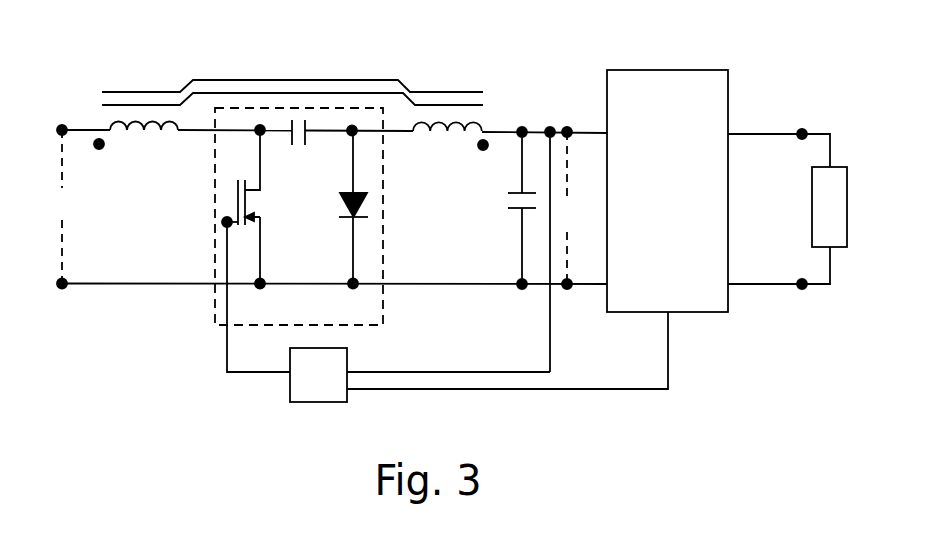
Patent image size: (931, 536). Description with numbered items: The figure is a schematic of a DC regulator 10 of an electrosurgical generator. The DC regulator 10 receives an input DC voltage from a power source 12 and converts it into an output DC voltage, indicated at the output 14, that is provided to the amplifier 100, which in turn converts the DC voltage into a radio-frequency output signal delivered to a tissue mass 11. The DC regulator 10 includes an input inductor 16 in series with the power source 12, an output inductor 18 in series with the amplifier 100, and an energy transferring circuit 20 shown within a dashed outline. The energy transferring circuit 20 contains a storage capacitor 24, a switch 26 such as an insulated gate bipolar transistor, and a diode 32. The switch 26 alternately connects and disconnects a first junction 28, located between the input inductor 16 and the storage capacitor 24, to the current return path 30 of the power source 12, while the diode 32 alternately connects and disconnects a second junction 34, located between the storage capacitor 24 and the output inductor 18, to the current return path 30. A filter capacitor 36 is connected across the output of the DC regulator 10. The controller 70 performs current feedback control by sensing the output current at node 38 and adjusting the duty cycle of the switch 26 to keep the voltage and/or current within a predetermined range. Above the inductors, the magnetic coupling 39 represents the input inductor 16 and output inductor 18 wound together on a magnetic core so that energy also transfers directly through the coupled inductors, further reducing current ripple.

The DC regulator 10 is at (297, 75).
The tissue mass 11 is at (819, 223).
The power source 12 is at (79, 207).
The output voltage 14 is at (568, 208).
The input inductor 16 is at (108, 127).
The output inductor 18 is at (484, 121).
The energy transferring circuit 20 is at (384, 203).
The storage capacitor 24 is at (292, 142).
The switch 26 is at (237, 210).
The first junction 28 is at (258, 133).
The current return path 30 is at (145, 284).
The diode 32 is at (338, 202).
The second junction 34 is at (350, 133).
The filter capacitor 36 is at (518, 210).
The node 38 is at (550, 118).
The magnetic coupling 39 is at (373, 80).
The controller 70 is at (304, 391).
The amplifier 100 is at (646, 205).